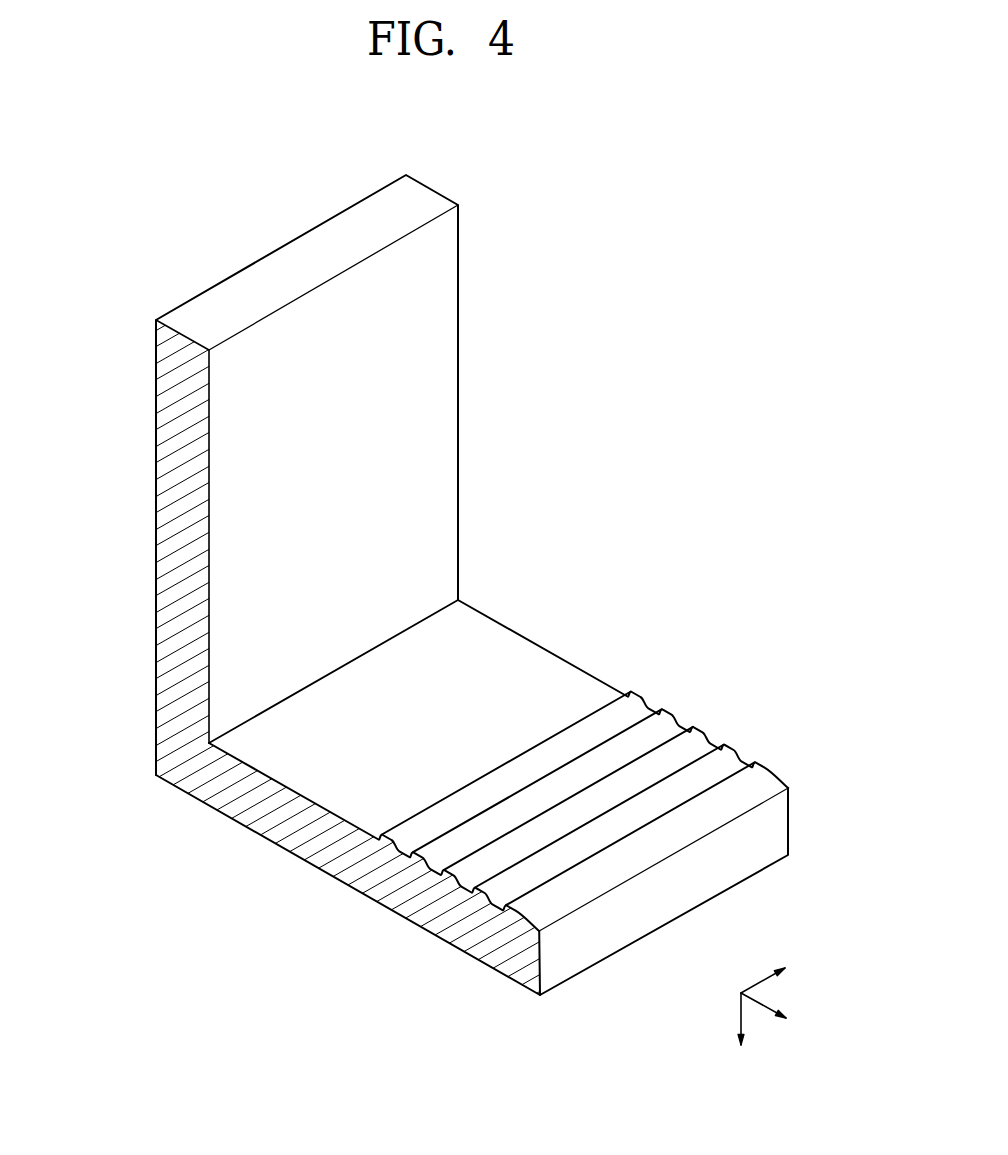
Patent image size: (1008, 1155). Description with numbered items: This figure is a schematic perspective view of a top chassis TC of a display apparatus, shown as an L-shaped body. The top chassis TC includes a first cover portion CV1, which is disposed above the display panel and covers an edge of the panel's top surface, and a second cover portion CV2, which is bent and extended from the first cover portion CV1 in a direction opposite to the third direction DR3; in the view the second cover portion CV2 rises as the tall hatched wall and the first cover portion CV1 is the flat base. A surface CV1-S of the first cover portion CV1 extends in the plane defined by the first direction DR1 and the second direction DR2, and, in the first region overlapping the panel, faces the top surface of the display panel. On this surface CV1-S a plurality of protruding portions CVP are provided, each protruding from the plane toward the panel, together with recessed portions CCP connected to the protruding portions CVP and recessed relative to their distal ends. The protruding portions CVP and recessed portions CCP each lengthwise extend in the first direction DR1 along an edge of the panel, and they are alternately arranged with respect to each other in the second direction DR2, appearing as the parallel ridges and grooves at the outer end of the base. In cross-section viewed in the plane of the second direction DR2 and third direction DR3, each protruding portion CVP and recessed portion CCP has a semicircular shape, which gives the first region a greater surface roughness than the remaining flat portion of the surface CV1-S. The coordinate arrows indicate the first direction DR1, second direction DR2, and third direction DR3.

The top chassis TC is at (725, 207).
The first cover portion CV1 is at (250, 802).
The second cover portion CV2 is at (180, 500).
The surface CV1-S is at (502, 677).
The recessed portion CCP is at (712, 743).
The protruding portion CVP is at (757, 760).
The first direction DR1 is at (783, 975).
The second direction DR2 is at (784, 1012).
The third direction DR3 is at (740, 1032).